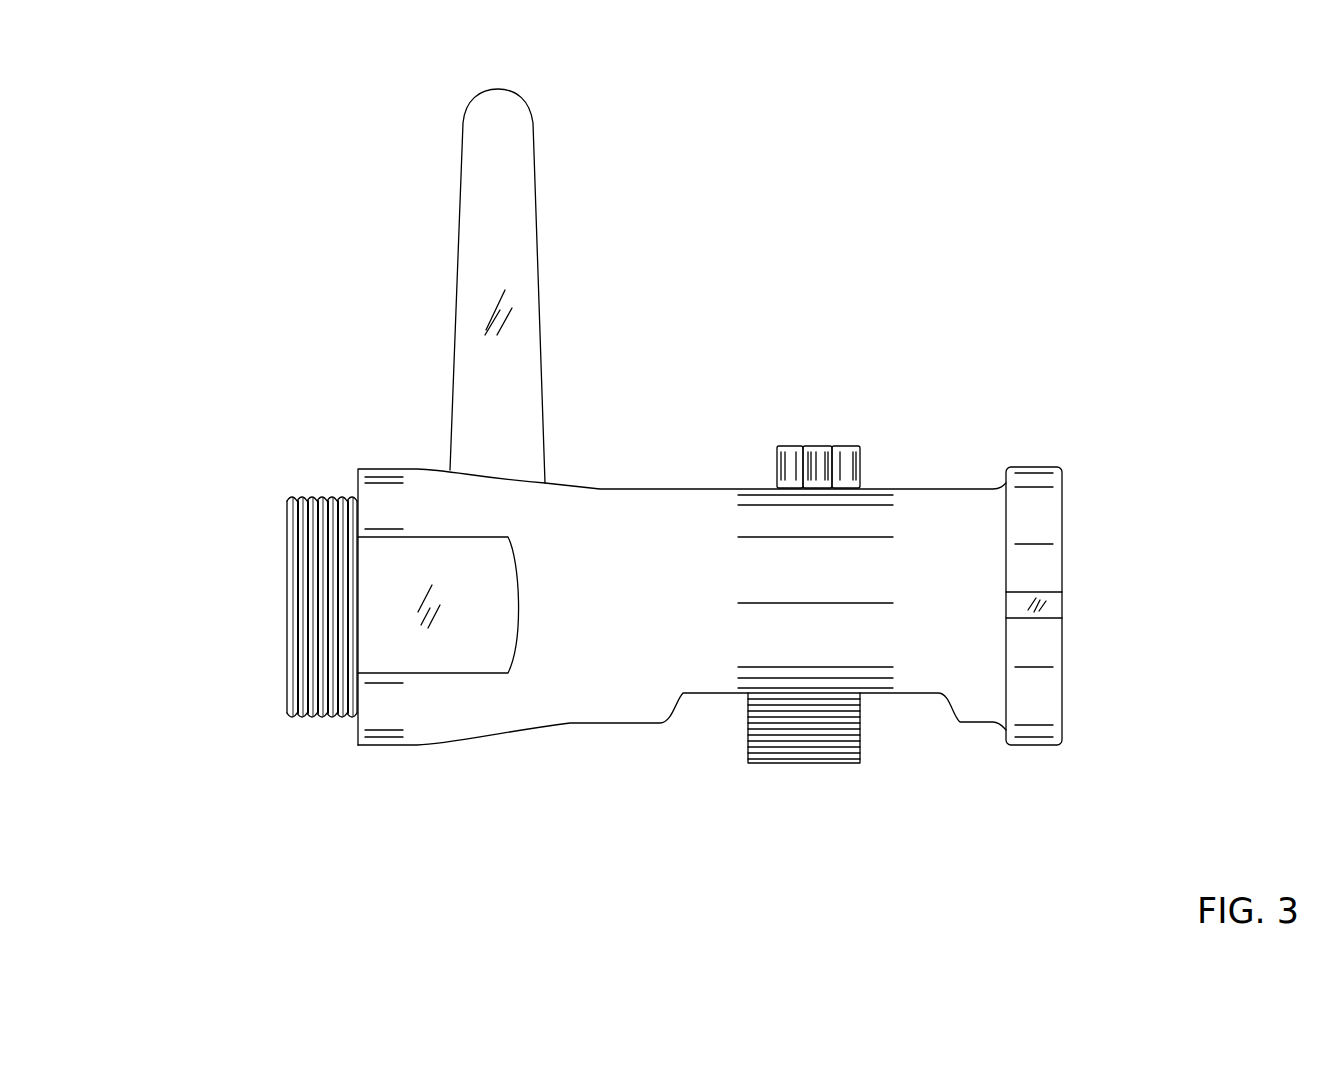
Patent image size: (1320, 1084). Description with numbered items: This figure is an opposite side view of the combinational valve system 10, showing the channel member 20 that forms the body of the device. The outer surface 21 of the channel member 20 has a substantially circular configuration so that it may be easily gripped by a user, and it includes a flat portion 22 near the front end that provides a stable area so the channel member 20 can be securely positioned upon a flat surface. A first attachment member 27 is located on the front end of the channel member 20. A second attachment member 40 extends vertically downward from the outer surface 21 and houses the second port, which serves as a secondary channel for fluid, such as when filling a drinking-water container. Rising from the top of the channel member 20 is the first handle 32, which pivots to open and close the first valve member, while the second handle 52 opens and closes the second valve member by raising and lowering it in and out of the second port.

The combinational valve system 10 is at (234, 158).
The channel member 20 is at (603, 470).
The outer surface 21 is at (585, 690).
The flat portion 22 is at (477, 650).
The first attachment member 27 is at (300, 583).
The first handle 32 is at (510, 183).
The second attachment member 40 is at (832, 748).
The second handle 52 is at (852, 445).